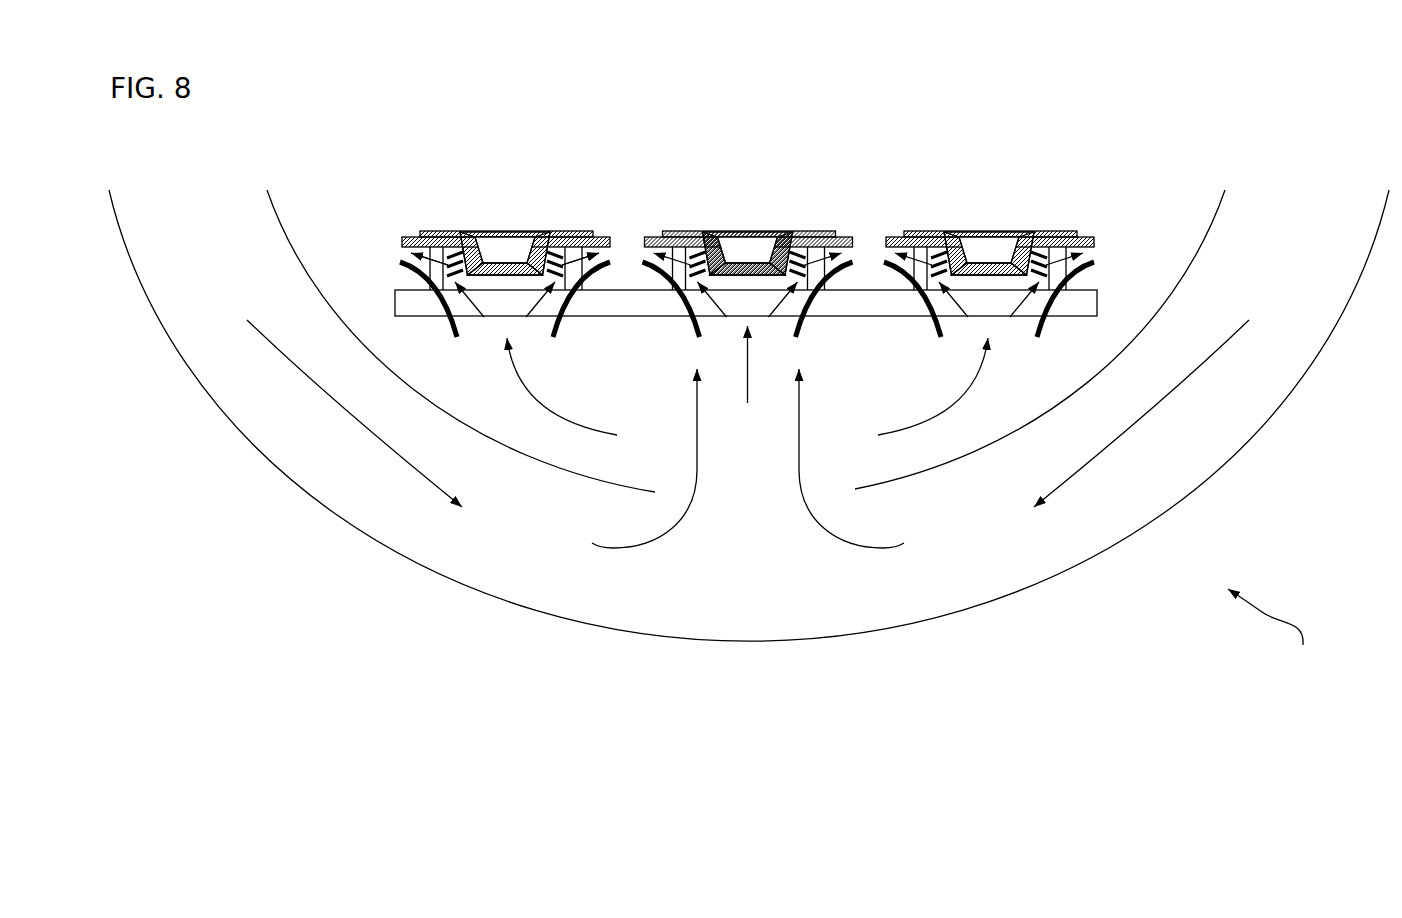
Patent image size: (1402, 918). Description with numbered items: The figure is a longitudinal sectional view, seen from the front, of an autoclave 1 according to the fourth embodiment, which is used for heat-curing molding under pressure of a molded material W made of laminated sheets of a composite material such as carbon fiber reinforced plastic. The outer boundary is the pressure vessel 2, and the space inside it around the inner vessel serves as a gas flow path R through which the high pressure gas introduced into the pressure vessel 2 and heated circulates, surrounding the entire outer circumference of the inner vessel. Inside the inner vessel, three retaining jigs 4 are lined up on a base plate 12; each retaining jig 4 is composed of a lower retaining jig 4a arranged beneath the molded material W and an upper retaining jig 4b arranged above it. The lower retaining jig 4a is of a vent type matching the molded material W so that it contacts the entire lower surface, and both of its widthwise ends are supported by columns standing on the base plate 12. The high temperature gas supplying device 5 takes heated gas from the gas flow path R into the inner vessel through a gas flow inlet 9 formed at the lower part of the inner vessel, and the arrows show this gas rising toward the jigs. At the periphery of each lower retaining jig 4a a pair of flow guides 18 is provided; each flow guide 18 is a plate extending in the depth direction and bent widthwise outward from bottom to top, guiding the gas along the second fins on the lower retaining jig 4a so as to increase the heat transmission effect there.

The autoclave 1 is at (1270, 632).
The pressure vessel 2 is at (243, 440).
The retaining jig 4 is at (562, 173).
The lower retaining jig 4a is at (500, 270).
The upper retaining jig 4b is at (537, 235).
The high temperature gas supplying device 5 is at (667, 527).
The gas flow inlet 9 is at (747, 416).
The base plate 12 is at (1097, 292).
The flow guide 18 is at (452, 330).
The molded material W is at (435, 232).
The gas flow path R is at (748, 432).